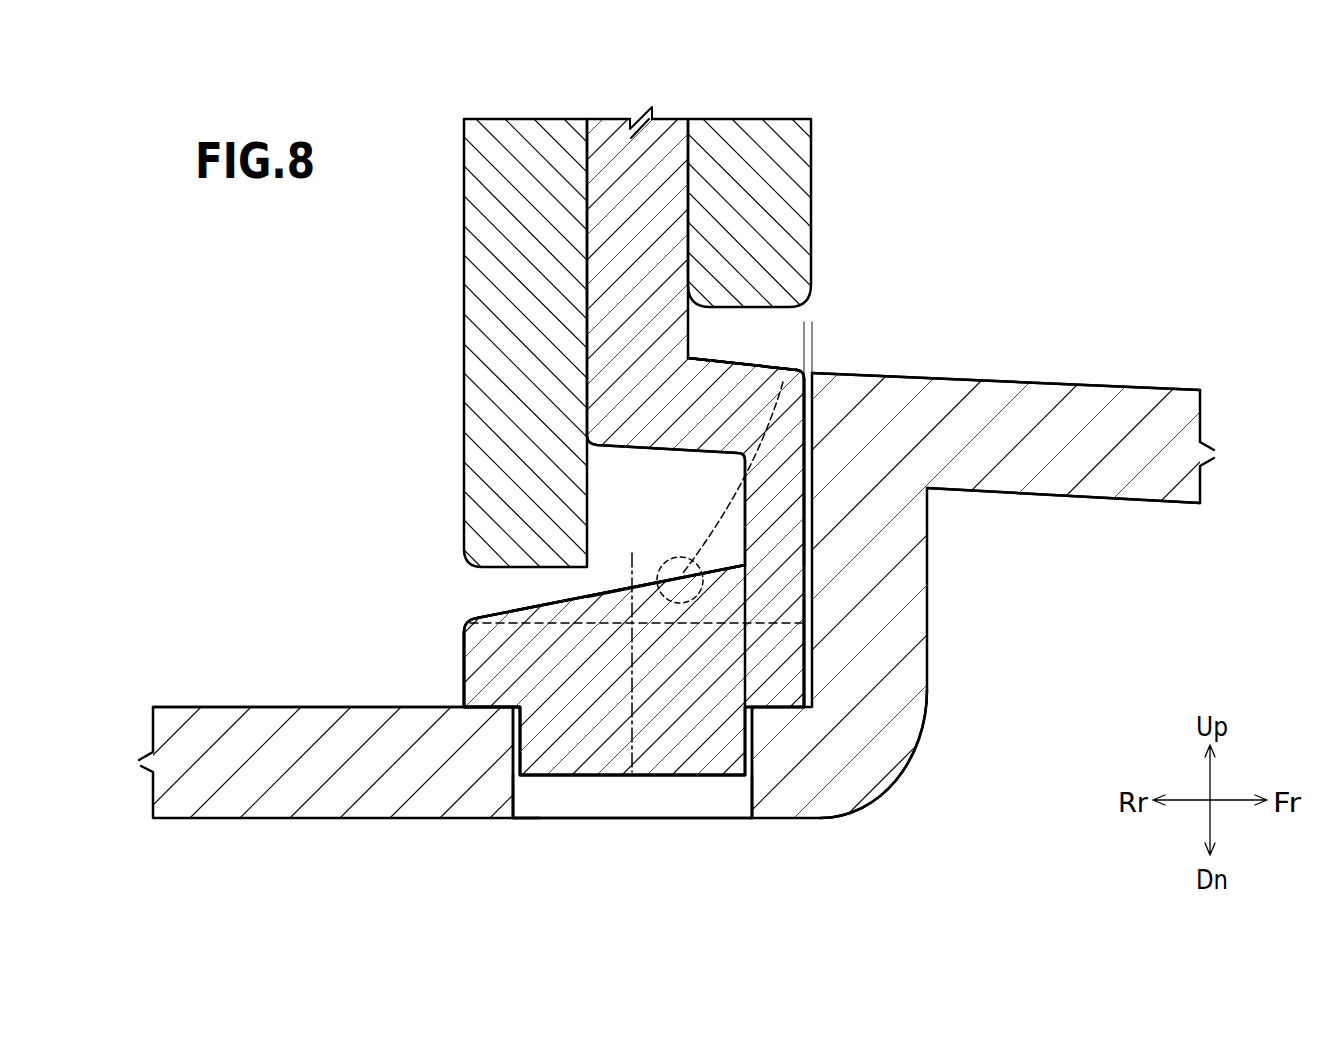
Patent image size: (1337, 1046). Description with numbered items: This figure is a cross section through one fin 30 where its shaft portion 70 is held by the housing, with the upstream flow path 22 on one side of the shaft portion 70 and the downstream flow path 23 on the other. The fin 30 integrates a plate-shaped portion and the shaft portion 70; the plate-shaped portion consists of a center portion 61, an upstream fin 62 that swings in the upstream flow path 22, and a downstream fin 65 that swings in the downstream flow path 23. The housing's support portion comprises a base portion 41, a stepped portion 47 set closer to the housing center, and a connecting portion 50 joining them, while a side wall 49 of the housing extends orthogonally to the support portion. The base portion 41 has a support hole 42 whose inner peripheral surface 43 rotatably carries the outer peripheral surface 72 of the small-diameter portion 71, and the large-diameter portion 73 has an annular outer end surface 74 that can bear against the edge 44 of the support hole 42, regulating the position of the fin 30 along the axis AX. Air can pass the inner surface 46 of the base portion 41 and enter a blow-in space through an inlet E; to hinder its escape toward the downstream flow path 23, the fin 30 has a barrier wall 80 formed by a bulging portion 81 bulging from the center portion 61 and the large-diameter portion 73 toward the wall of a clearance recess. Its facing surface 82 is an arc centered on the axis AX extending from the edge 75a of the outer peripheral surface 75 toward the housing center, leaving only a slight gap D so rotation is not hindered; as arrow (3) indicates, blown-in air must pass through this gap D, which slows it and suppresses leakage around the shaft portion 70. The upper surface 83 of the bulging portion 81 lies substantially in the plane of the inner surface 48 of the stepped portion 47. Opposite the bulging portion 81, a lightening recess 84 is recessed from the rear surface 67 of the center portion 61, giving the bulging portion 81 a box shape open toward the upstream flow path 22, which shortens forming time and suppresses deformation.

The upstream flow path 22 is at (288, 352).
The downstream flow path 23 is at (988, 226).
The fin 30 is at (662, 133).
The center portion 61 is at (610, 137).
The upstream fin 62 is at (523, 137).
The downstream fin 65 is at (752, 137).
The base portion 41 is at (318, 775).
The support hole 42 is at (528, 818).
The inner peripheral surface 43 is at (573, 802).
The edge 44 is at (478, 708).
The inner surface 46 is at (317, 707).
The stepped portion 47 is at (1063, 443).
The inner surface 48 is at (1023, 381).
The side wall 49 is at (934, 782).
The connecting portion 50 is at (878, 567).
The rear surface 67 is at (587, 586).
The shaft portion 70 is at (617, 865).
The small-diameter portion 71 is at (653, 735).
The outer peripheral surface 72 is at (748, 743).
The large-diameter portion 73 is at (658, 650).
The annular outer end surface 74 is at (778, 710).
The outer peripheral surface 75 is at (808, 663).
The edge 75a is at (812, 621).
The barrier wall 80 is at (790, 461).
The bulging portion 81 is at (773, 484).
The facing surface 82 is at (806, 508).
The upper surface 83 is at (743, 364).
The lightening recess 84 is at (635, 494).
The arrow 3 is at (733, 505).
The gap D is at (775, 331).
The inlet E is at (678, 557).
The axis AX is at (633, 684).